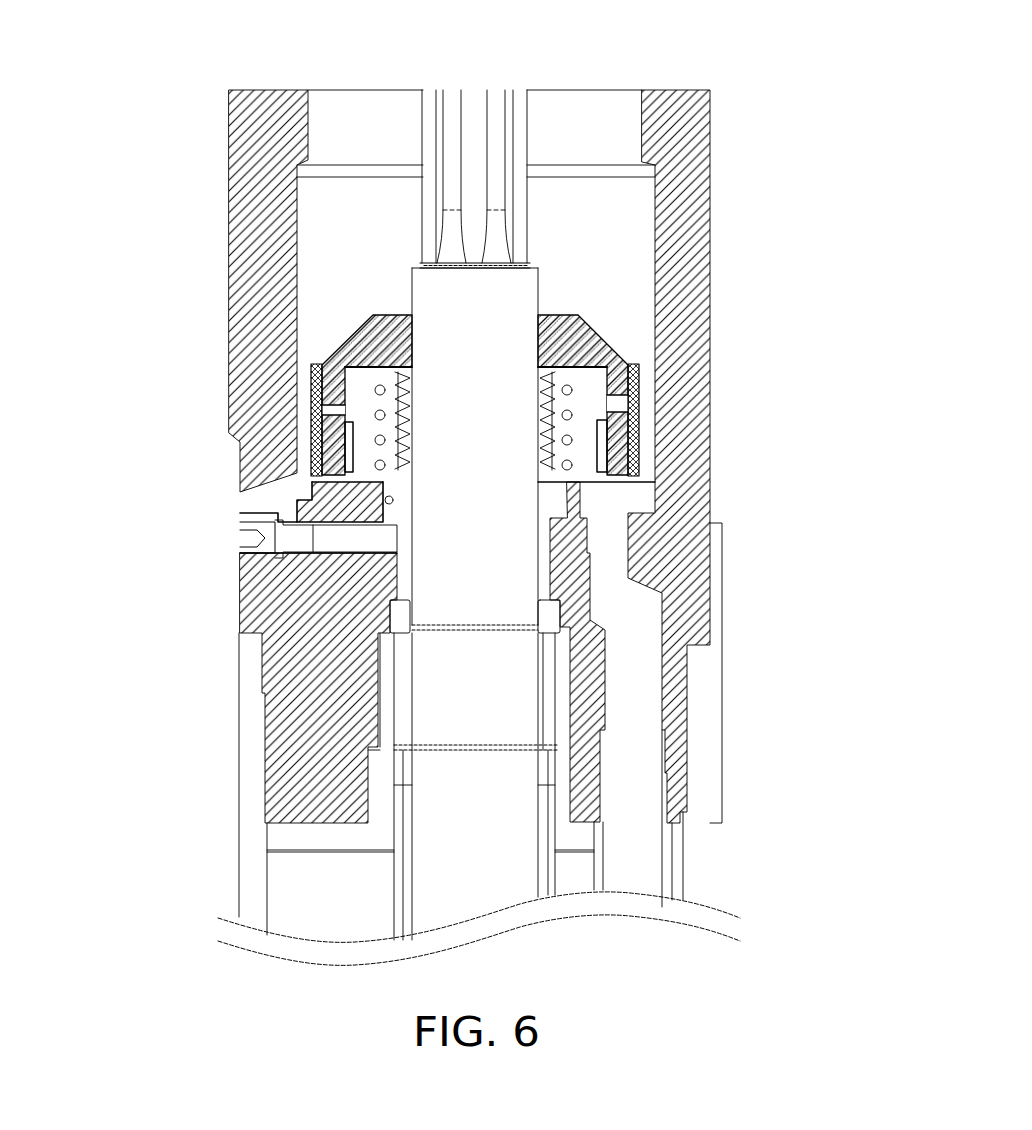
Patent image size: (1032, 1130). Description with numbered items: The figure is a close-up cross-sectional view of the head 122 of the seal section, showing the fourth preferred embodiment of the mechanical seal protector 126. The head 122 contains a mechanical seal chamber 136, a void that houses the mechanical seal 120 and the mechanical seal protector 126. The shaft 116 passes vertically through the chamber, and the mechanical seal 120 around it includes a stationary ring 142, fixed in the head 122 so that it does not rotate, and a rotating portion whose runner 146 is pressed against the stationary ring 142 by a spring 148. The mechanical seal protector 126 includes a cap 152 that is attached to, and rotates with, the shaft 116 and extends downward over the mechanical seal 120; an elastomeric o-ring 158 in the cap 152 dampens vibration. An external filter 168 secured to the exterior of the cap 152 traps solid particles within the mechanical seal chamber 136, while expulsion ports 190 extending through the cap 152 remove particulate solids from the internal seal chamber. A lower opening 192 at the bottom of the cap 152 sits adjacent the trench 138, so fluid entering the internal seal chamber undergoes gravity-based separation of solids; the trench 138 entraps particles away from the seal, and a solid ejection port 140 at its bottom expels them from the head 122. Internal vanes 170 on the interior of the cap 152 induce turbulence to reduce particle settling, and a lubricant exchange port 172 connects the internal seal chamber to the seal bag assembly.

The shaft 116 is at (477, 127).
The mechanical seal chamber 136 is at (585, 197).
The head 122 is at (767, 246).
The o-ring 158 is at (408, 337).
The cap 152 is at (362, 325).
The spring 148 is at (380, 390).
The expulsion ports 190 is at (342, 400).
The internal vanes 170 is at (352, 430).
The runner 146 is at (400, 468).
The solid ejection port 140 is at (243, 510).
The trench 138 is at (317, 482).
The stationary ring 142 is at (405, 508).
The mechanical seal protector 126 is at (618, 338).
The mechanical seal 120 is at (575, 425).
The external filter 168 is at (635, 448).
The lower opening 192 is at (620, 495).
The lubricant exchange port 172 is at (652, 608).